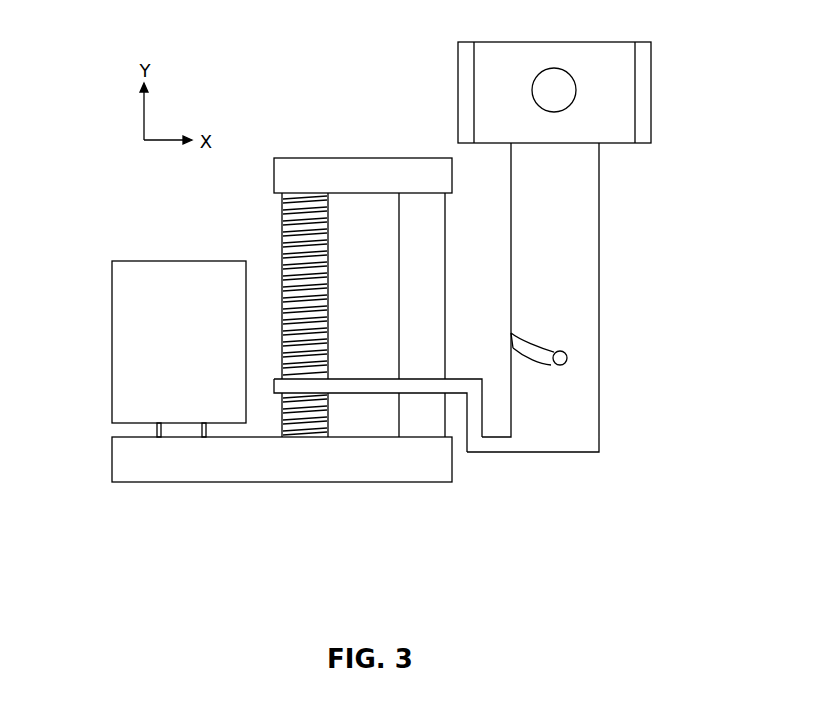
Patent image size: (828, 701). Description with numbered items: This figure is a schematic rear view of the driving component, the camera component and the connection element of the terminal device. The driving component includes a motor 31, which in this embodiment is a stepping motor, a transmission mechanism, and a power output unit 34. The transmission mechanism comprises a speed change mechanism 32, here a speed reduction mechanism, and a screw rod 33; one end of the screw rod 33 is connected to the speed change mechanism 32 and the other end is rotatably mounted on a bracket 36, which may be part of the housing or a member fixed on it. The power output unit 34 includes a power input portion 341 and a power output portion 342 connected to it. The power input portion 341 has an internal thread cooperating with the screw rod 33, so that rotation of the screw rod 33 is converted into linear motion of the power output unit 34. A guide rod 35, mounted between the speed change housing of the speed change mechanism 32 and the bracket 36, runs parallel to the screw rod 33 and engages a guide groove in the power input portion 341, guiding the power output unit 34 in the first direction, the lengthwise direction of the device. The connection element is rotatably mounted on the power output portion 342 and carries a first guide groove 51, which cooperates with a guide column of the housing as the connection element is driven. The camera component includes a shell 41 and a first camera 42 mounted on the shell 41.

The motor 31 is at (159, 381).
The speed change mechanism 32 is at (217, 452).
The screw rod 33 is at (300, 423).
The power output unit 34 is at (436, 373).
The power input portion 341 is at (362, 387).
The power output portion 342 is at (532, 445).
The guide rod 35 is at (420, 223).
The bracket 36 is at (330, 178).
The shell 41 is at (583, 60).
The first camera 42 is at (555, 98).
The first guide groove 51 is at (536, 356).